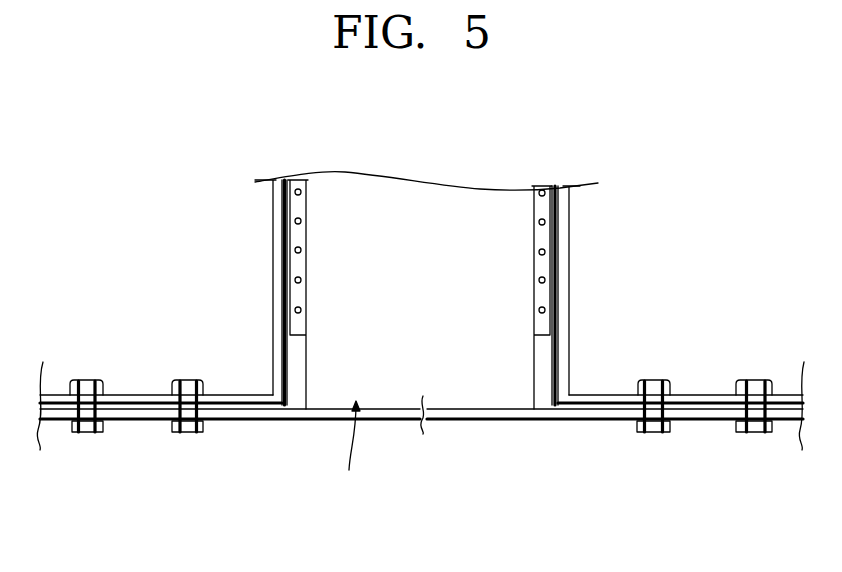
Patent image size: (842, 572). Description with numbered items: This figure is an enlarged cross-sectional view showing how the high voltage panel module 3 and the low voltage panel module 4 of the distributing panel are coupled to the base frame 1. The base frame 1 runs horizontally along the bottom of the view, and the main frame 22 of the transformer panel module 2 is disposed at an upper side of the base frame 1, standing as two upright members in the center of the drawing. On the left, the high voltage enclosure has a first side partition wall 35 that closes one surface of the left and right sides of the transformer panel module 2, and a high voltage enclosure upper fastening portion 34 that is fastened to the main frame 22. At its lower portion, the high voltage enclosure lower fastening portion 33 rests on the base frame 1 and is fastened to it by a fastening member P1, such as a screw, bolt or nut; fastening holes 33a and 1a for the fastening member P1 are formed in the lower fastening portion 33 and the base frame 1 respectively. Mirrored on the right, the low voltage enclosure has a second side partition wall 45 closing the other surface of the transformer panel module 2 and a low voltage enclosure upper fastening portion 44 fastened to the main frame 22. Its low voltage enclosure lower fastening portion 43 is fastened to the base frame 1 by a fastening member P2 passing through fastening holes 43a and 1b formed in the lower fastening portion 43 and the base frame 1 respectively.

The base frame 1 is at (383, 421).
The fastening hole 1a is at (112, 432).
The fastening hole 1b is at (640, 432).
The transformer panel module 2 is at (351, 446).
The high voltage panel module 3 is at (122, 296).
The low voltage panel module 4 is at (722, 296).
The main frame 22 is at (421, 293).
The high voltage enclosure lower fastening portion 33 is at (152, 387).
The fastening hole 33a is at (95, 391).
The high voltage enclosure upper fastening portion 34 is at (304, 207).
The first side partition wall 35 is at (271, 222).
The low voltage enclosure lower fastening portion 43 is at (690, 390).
The fastening hole 43a is at (646, 391).
The low voltage enclosure upper fastening portion 44 is at (541, 204).
The second side partition wall 45 is at (569, 222).
The fastening member P1 is at (87, 432).
The fastening member P2 is at (653, 432).